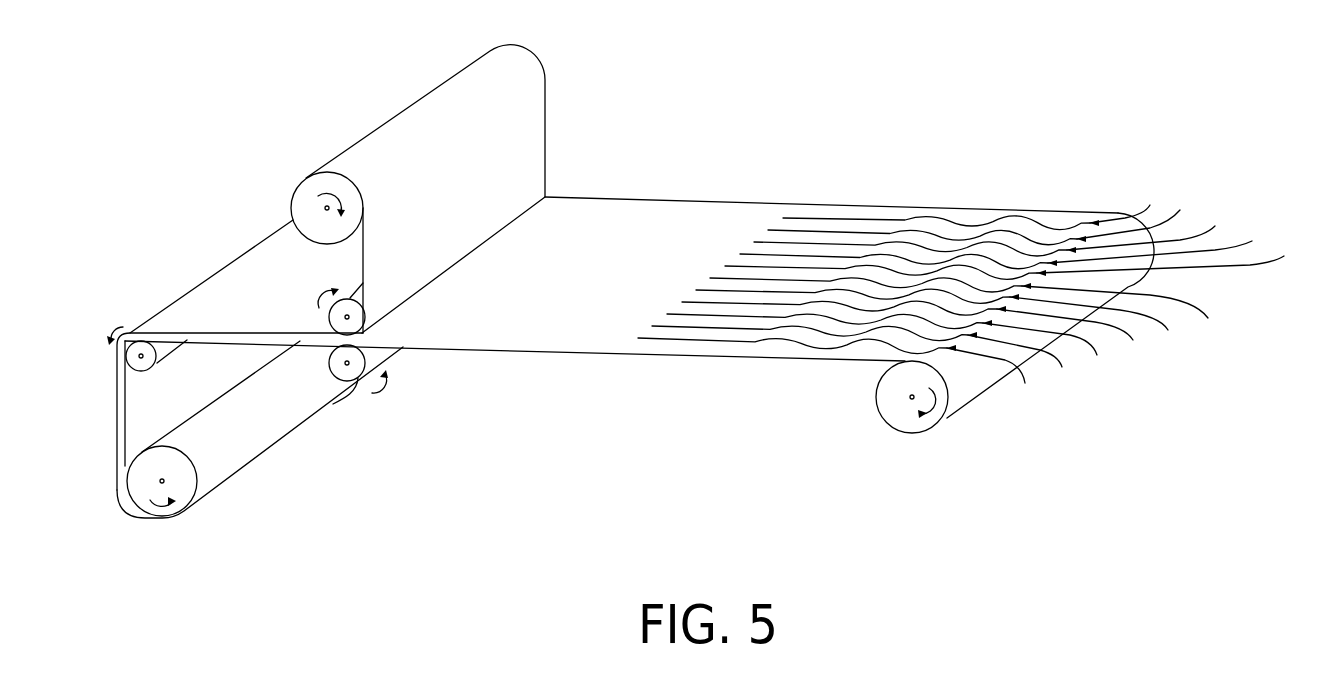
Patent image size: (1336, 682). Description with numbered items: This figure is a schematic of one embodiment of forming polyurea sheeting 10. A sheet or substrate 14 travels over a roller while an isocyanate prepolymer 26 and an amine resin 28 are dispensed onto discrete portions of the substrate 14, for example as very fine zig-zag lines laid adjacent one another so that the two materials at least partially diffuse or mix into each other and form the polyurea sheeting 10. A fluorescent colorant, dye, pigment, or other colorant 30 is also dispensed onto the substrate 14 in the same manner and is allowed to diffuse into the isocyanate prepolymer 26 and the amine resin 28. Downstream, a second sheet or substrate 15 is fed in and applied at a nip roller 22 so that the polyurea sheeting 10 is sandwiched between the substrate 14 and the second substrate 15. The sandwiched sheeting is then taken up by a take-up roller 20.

The polyurea sheeting 10 is at (585, 320).
The substrate 14 is at (973, 374).
The second substrate 15 is at (519, 164).
The take-up roller 20 is at (228, 467).
The nip roller 22 is at (330, 312).
The isocyanate prepolymer 26 is at (959, 290).
The amine resin 28 is at (985, 289).
The colorant 30 is at (955, 291).